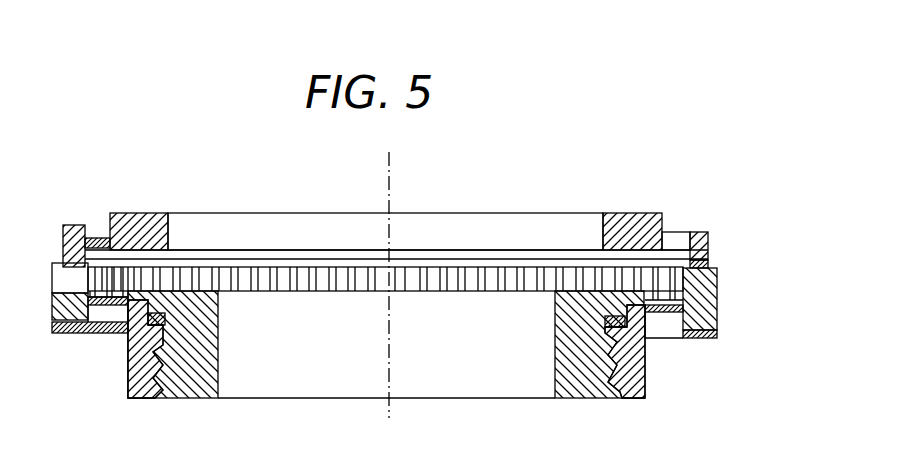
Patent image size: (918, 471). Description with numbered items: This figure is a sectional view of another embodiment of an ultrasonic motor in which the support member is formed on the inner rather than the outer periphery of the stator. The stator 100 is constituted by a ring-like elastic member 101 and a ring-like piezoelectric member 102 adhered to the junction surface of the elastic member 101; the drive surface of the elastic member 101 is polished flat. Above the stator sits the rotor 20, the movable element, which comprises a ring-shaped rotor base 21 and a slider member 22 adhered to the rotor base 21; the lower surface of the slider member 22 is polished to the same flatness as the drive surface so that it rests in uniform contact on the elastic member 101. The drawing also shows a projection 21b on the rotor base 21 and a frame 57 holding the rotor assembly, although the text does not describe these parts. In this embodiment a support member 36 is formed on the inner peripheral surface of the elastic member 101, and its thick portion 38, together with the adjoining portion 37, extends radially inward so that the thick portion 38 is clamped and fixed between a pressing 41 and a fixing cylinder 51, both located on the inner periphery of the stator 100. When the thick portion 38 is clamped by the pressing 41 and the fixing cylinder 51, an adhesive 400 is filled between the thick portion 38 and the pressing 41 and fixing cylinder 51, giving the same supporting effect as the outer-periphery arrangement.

The rotor 20 is at (747, 223).
The rotor base 21 is at (705, 240).
The projection of movable plate 21b is at (680, 232).
The slider member 22 is at (706, 264).
The support member 36 is at (85, 349).
The support member 37 is at (108, 335).
The thick portion 38 is at (126, 336).
The pressing 41 is at (640, 372).
The fixing cylinder 51 is at (582, 383).
The holding frame 57 is at (622, 242).
The stator 100 is at (756, 311).
The elastic member 101 is at (718, 311).
The piezoelectric member 102 is at (718, 335).
The adhesive 400 is at (612, 322).